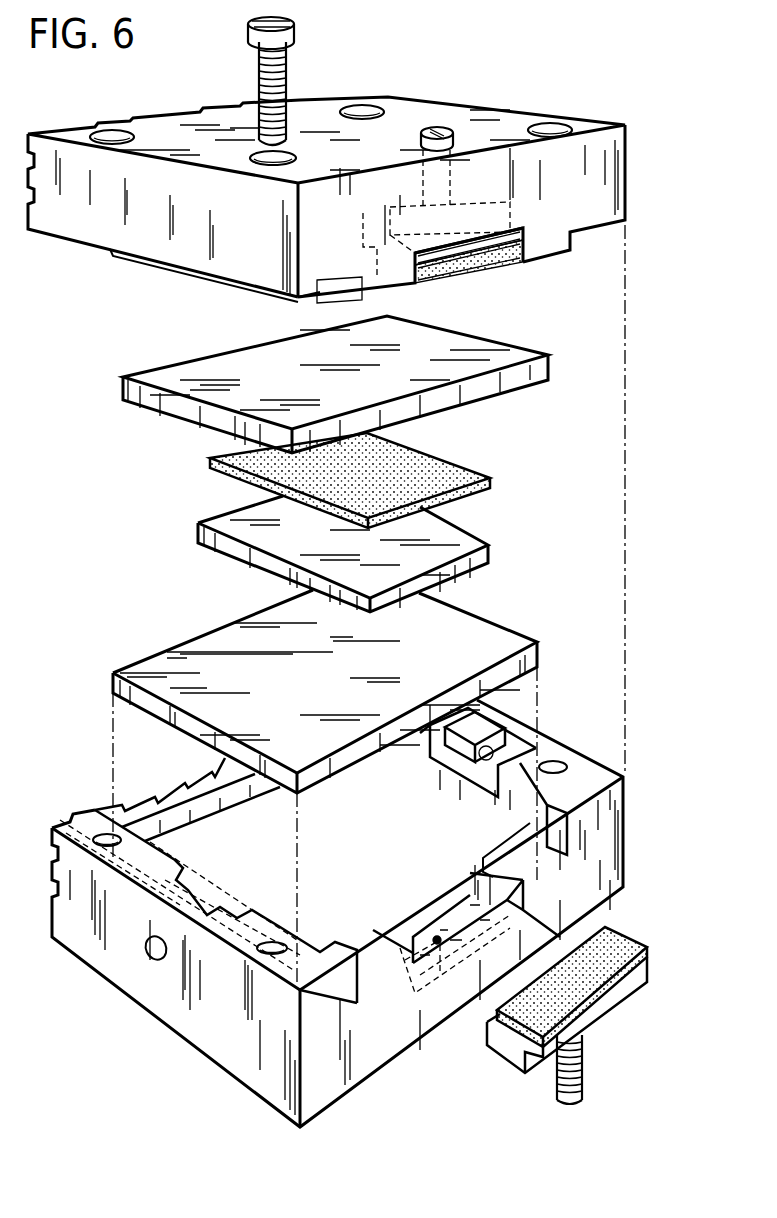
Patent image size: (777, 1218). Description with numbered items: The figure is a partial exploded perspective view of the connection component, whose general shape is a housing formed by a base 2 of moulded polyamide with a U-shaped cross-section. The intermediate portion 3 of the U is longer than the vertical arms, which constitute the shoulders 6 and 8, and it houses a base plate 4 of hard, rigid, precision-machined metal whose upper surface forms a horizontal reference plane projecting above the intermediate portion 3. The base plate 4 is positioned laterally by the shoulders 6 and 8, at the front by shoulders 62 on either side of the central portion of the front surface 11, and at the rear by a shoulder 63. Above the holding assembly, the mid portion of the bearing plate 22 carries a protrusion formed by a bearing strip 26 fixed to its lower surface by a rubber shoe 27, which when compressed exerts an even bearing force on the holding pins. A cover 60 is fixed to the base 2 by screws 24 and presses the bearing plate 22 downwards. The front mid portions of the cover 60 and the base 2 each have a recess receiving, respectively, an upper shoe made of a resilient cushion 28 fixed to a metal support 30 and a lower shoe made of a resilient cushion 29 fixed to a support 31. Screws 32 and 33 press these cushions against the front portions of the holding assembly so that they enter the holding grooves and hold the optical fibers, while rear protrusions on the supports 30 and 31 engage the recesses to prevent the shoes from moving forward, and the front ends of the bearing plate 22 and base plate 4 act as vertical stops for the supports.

The base 2 is at (354, 912).
The intermediate portion 3 is at (392, 893).
The base plate 4 is at (483, 657).
The shoulder 6 is at (247, 932).
The shoulder 8 is at (527, 767).
The front surface 11 is at (358, 1043).
The bearing plate 22 is at (505, 362).
The screw 24 is at (287, 90).
The bearing strip 26 is at (463, 537).
The rubber shoe 27 is at (455, 473).
The resilient cushion 28 is at (490, 263).
The resilient cushion 29 is at (632, 937).
The metal support 30 is at (493, 247).
The support 31 is at (607, 1000).
The screw 32 is at (442, 127).
The screw 33 is at (583, 1063).
The cover 60 is at (510, 123).
The shoulder 62 is at (605, 897).
The shoulder 63 is at (190, 830).